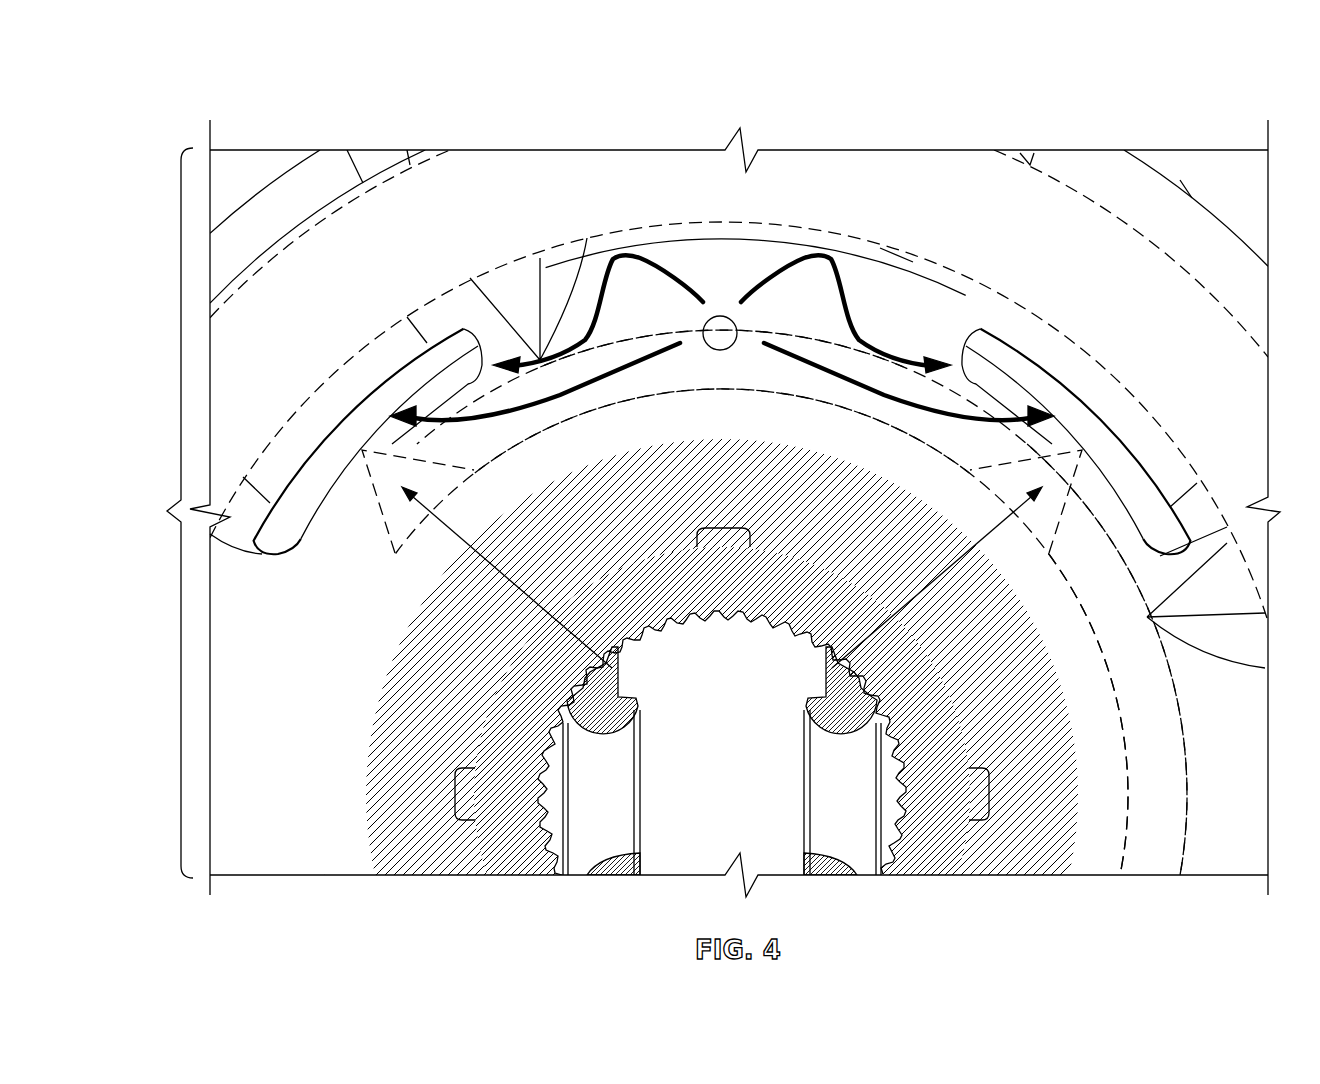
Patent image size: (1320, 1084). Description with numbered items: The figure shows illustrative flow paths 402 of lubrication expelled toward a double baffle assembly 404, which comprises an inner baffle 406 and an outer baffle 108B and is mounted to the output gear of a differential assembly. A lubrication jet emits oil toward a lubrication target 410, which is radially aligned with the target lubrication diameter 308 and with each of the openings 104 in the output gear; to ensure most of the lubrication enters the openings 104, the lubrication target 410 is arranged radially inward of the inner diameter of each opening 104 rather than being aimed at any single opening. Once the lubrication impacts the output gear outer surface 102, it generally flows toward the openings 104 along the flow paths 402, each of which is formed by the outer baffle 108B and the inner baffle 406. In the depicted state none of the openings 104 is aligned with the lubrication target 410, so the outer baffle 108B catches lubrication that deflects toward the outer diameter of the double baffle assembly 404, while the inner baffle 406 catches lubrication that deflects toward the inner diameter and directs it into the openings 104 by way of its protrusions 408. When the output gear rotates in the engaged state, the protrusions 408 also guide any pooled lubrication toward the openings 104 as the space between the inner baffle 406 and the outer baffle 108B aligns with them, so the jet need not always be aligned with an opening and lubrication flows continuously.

The output gear outer surface 102 is at (565, 283).
The openings 104 is at (300, 493).
The outer baffle 108B is at (913, 188).
The target lubrication diameter 308 is at (252, 778).
The flow paths 402 is at (400, 405).
The double baffle assembly 404 is at (154, 513).
The inner baffle 406 is at (1098, 797).
The protrusions 408 is at (617, 680).
The lubrication target 410 is at (716, 322).